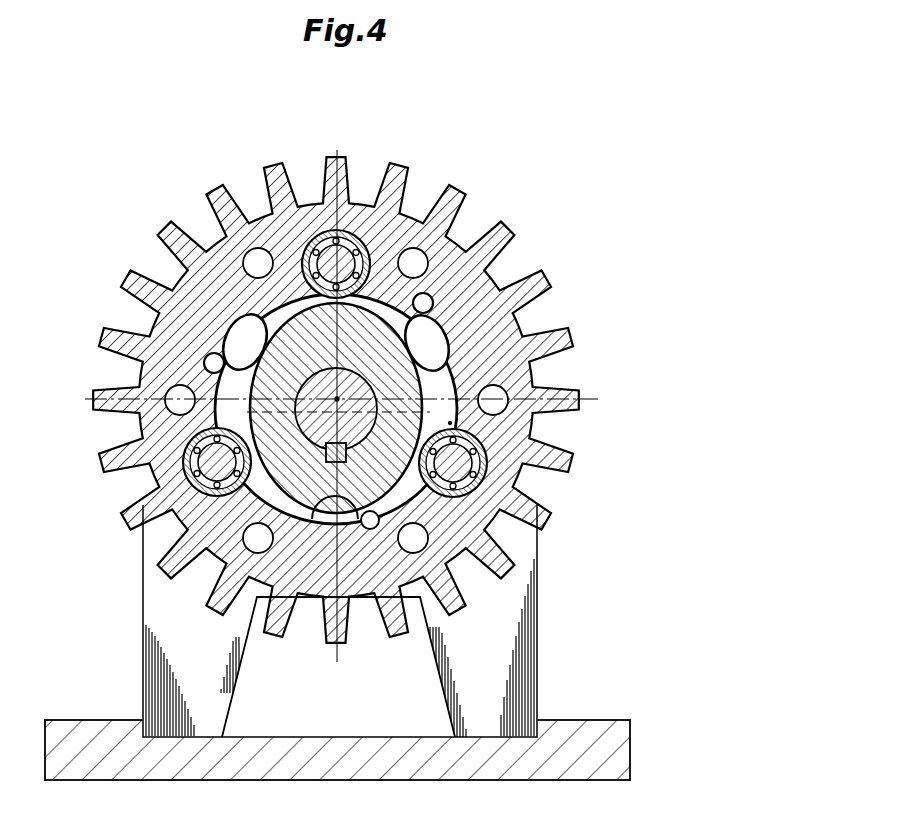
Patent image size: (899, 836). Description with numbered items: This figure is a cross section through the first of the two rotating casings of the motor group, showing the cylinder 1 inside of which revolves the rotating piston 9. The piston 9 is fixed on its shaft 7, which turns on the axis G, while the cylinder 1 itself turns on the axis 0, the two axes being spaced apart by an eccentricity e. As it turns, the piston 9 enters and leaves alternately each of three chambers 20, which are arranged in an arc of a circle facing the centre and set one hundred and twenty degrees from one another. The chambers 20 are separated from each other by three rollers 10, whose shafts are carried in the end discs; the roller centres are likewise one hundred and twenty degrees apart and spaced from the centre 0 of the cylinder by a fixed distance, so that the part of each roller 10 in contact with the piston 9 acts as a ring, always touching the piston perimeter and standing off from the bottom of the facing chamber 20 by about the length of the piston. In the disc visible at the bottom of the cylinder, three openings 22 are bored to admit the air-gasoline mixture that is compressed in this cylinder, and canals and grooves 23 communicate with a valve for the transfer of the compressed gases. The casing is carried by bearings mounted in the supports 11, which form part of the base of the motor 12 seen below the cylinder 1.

The cylinder 1 is at (215, 293).
The shaft 7 is at (328, 390).
The rotating piston 9 is at (358, 340).
The roller 10 is at (350, 241).
The support 11 is at (183, 643).
The base of the motor 12 is at (580, 737).
The chamber 20 is at (435, 378).
The opening 22 is at (430, 336).
The canals and grooves 23 is at (424, 302).
The axis O 0 is at (337, 399).
The axis G is at (450, 423).